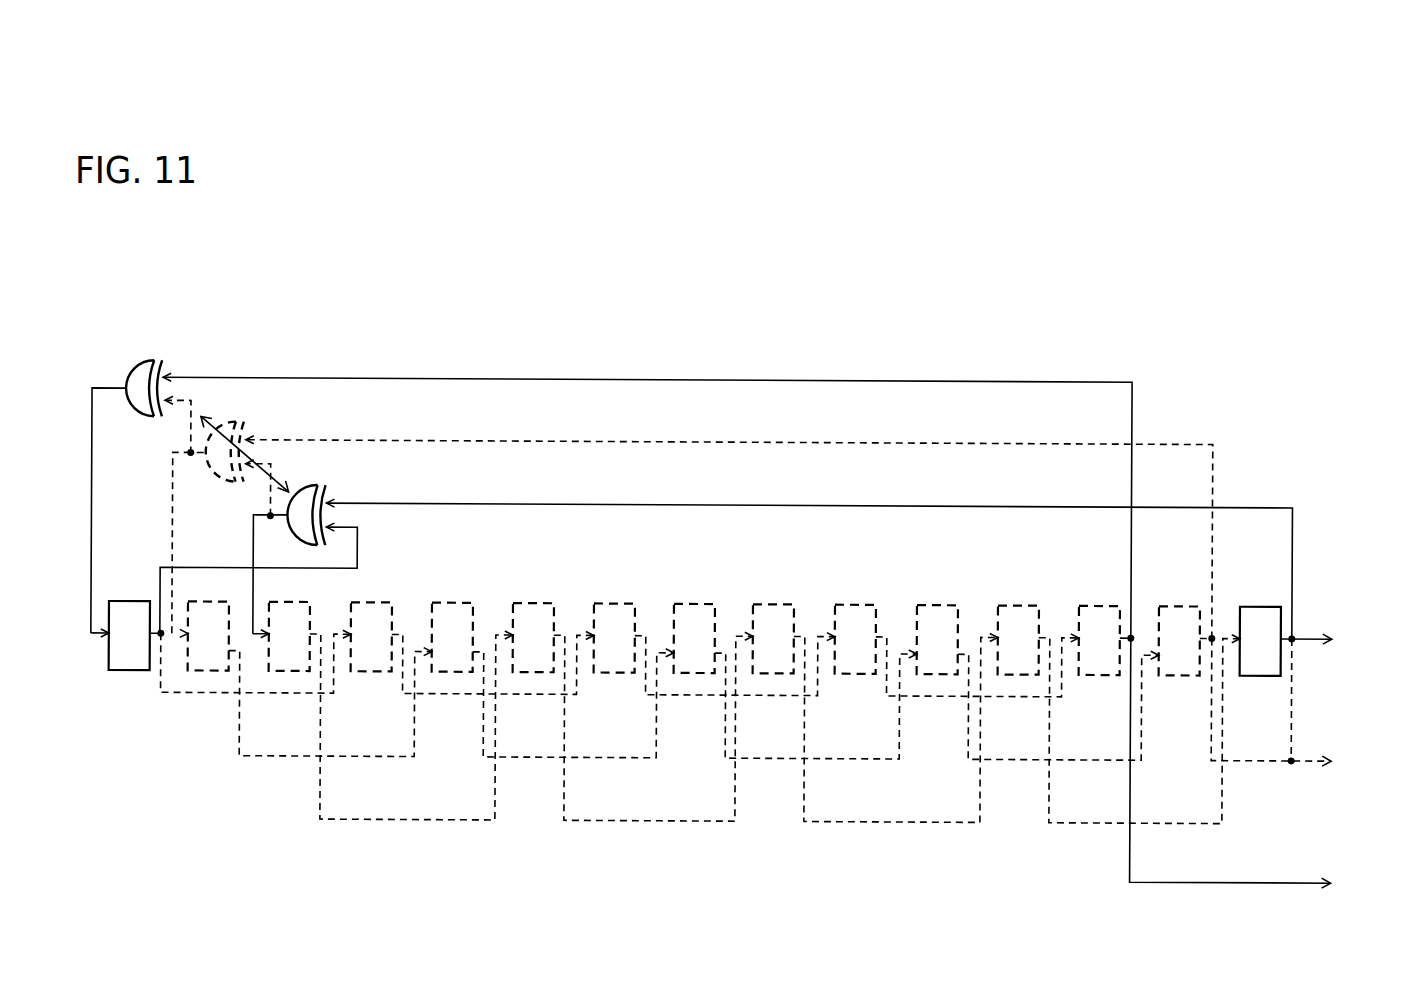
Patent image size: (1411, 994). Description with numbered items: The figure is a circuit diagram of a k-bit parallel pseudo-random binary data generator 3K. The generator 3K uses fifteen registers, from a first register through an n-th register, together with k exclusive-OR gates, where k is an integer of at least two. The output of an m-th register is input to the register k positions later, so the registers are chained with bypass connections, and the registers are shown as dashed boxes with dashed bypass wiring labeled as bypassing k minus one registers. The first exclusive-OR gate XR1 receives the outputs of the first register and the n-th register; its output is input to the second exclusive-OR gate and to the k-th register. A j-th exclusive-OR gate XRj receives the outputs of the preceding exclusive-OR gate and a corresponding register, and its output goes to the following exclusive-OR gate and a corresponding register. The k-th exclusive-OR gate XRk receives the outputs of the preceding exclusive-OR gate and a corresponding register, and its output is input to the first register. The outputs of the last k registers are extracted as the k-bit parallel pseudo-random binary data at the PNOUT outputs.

The k-bit parallel pseudo-random binary data generator 3K is at (762, 288).
The k-th exclusive-OR gate XRk is at (150, 362).
The j-th exclusive-OR gate XRj is at (236, 423).
The first exclusive-OR gate XR1 is at (311, 486).